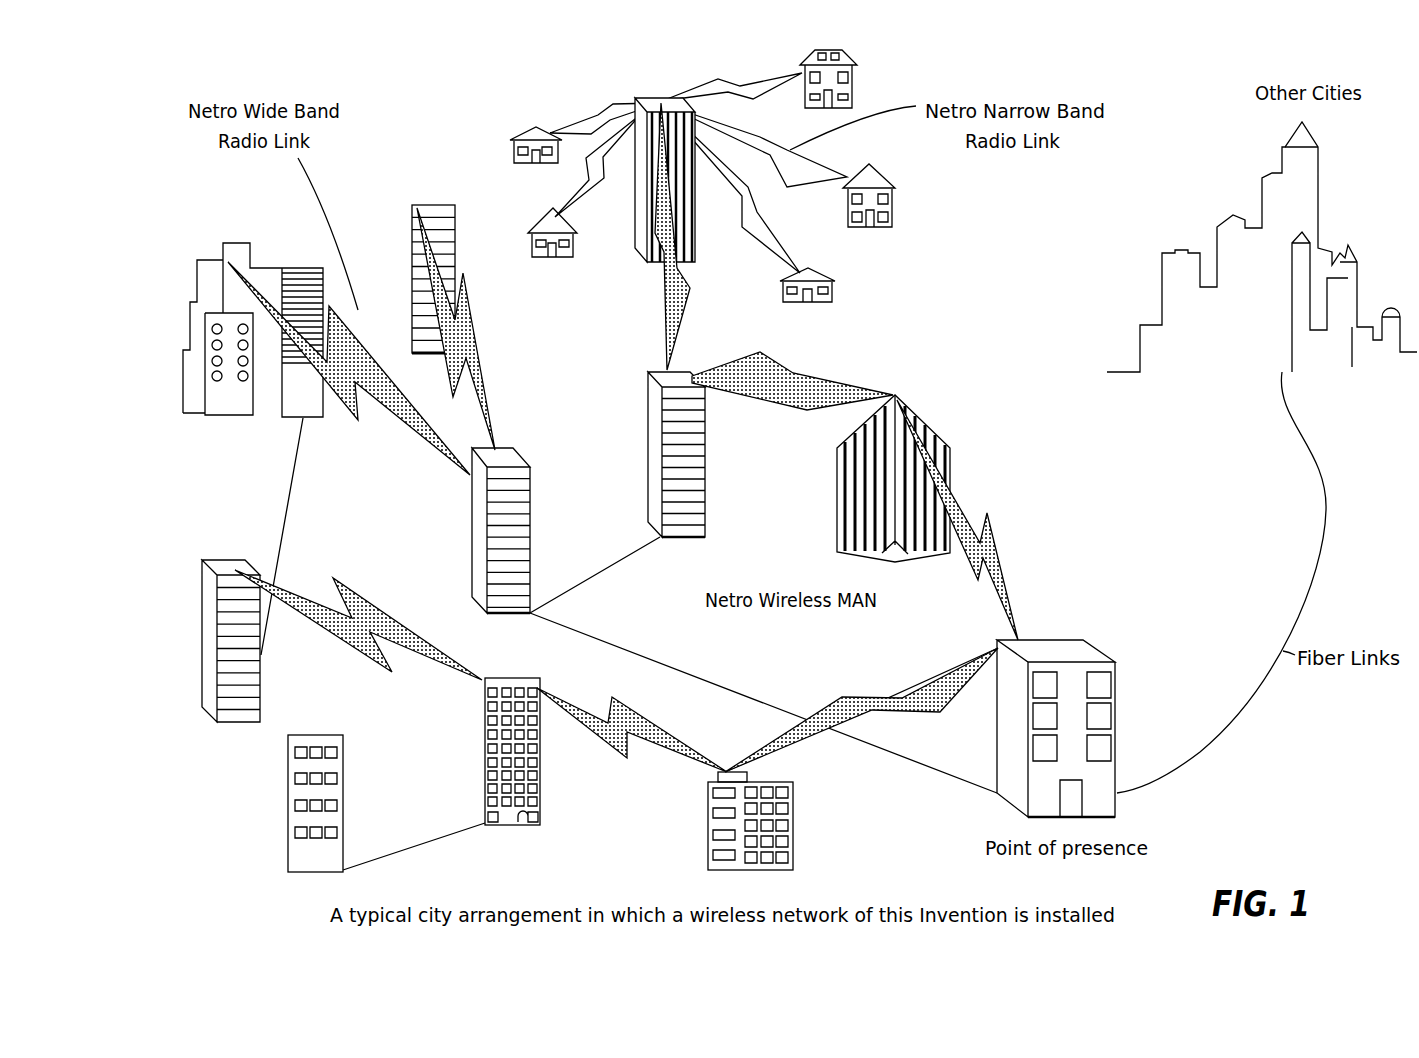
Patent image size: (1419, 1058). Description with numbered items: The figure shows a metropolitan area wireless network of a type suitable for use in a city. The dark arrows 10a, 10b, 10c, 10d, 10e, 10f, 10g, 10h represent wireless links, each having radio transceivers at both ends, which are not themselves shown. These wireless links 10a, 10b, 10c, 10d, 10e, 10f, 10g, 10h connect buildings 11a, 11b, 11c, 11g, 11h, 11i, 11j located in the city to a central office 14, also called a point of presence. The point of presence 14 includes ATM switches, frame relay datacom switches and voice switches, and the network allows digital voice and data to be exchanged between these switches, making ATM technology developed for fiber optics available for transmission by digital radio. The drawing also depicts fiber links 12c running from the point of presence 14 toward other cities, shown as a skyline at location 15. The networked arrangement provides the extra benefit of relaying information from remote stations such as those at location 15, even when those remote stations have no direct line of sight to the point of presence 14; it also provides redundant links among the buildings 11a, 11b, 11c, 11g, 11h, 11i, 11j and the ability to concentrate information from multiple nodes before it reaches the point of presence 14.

The wireless link 10a is at (349, 420).
The wireless link 10b is at (480, 338).
The wireless link 10c is at (660, 303).
The wireless link 10d is at (820, 375).
The wireless link 10e is at (963, 510).
The wireless link 10f is at (875, 688).
The wireless link 10g is at (633, 710).
The wireless link 10h is at (367, 600).
The building 11a is at (222, 418).
The building 11b is at (445, 205).
The building 11c is at (660, 98).
The building 11g is at (793, 841).
The building 11h is at (540, 792).
The building 11i is at (343, 768).
The building 11j is at (202, 653).
The fiber links 12c is at (1325, 495).
The point of presence 14 is at (1062, 640).
The remote station location 15 is at (1318, 193).